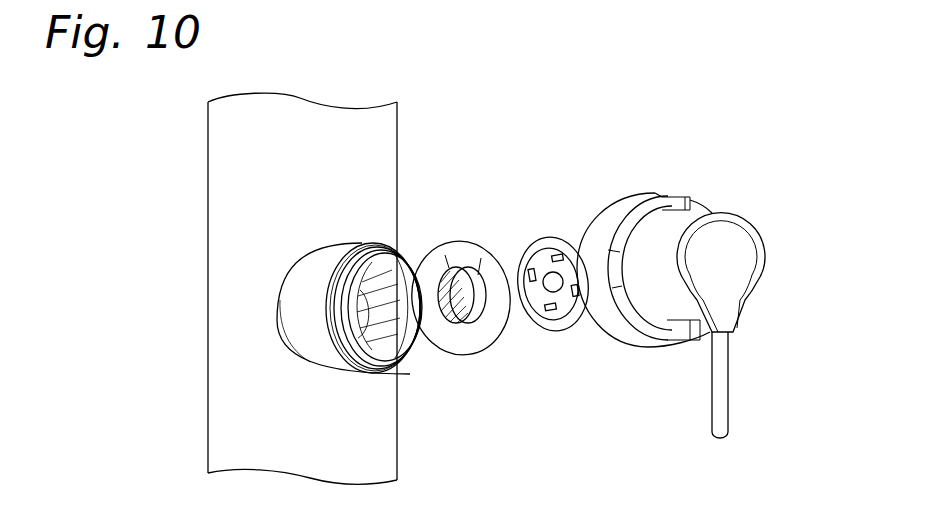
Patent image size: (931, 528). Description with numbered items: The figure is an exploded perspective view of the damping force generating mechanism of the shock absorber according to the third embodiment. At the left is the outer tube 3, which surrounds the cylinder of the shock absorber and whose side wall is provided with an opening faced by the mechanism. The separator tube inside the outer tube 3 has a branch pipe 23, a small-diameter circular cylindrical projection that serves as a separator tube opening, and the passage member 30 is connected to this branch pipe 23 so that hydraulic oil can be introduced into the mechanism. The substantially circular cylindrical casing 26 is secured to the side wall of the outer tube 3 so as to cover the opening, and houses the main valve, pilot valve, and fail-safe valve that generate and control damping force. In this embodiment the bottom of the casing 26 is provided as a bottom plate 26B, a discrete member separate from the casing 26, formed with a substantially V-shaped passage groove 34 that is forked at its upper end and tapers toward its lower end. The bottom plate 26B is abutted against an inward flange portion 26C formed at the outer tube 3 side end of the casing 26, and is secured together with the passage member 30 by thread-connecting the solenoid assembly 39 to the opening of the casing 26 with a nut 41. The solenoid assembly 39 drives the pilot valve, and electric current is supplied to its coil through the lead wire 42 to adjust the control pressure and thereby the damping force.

The outer tube 3 is at (227, 176).
The casing 26 is at (297, 322).
The branch pipe 23 is at (411, 372).
The inward flange portion 26C is at (410, 250).
The bottom plate 26B is at (477, 337).
The passage groove 34 is at (444, 257).
The passage member 30 is at (549, 238).
The nut 41 is at (630, 345).
The solenoid assembly 39 is at (733, 206).
The lead wire 42 is at (722, 395).